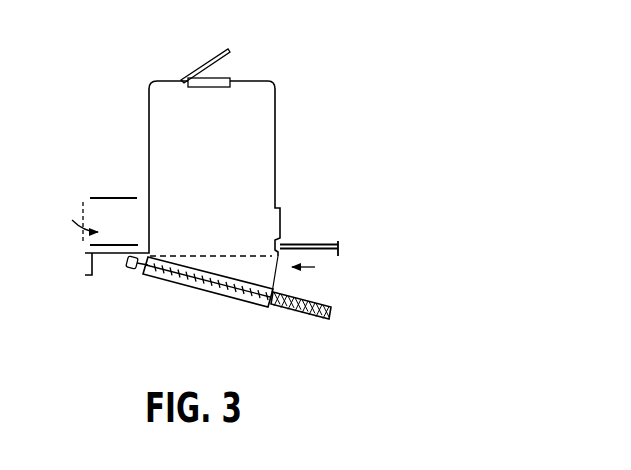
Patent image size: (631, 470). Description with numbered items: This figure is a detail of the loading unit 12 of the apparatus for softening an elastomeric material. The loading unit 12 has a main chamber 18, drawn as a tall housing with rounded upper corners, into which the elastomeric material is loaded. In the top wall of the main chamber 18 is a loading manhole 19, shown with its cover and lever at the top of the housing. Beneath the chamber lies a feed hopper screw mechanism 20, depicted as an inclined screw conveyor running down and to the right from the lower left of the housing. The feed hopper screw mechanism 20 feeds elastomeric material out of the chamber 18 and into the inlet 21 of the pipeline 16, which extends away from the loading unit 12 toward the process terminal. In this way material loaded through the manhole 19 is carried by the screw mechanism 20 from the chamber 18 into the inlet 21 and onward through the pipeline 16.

The loading unit 12 is at (322, 137).
The pipeline 16 is at (332, 314).
The main chamber 18 is at (230, 150).
The loading manhole 19 is at (240, 63).
The feed hopper screw mechanism 20 is at (160, 280).
The inlet 21 is at (288, 297).